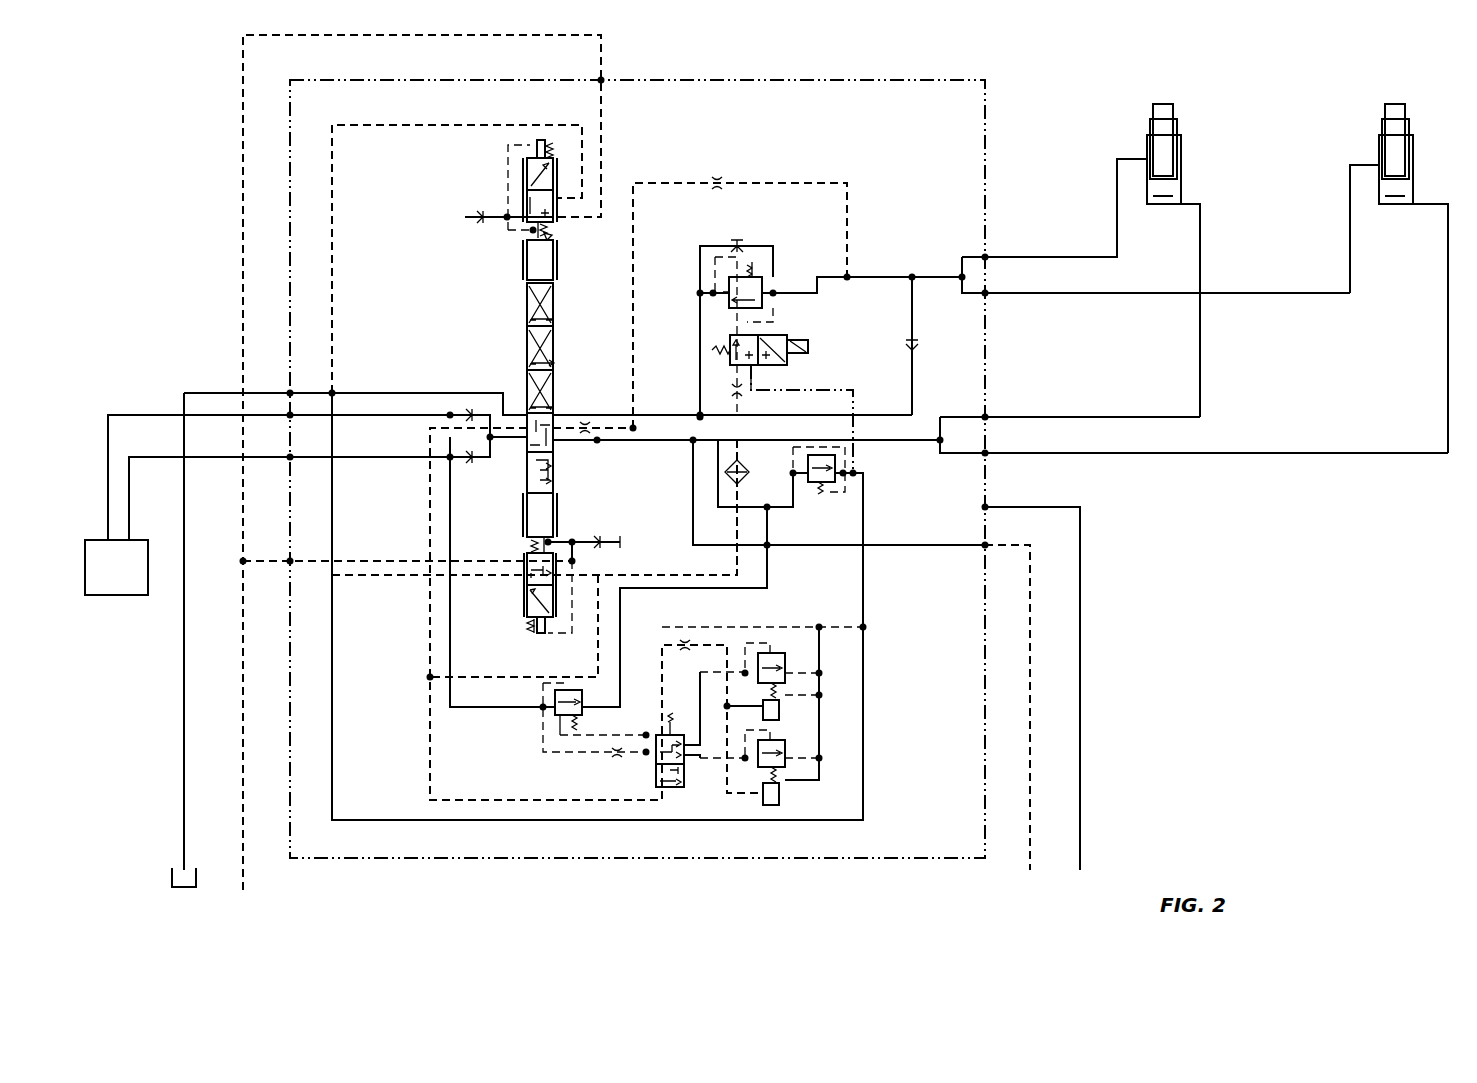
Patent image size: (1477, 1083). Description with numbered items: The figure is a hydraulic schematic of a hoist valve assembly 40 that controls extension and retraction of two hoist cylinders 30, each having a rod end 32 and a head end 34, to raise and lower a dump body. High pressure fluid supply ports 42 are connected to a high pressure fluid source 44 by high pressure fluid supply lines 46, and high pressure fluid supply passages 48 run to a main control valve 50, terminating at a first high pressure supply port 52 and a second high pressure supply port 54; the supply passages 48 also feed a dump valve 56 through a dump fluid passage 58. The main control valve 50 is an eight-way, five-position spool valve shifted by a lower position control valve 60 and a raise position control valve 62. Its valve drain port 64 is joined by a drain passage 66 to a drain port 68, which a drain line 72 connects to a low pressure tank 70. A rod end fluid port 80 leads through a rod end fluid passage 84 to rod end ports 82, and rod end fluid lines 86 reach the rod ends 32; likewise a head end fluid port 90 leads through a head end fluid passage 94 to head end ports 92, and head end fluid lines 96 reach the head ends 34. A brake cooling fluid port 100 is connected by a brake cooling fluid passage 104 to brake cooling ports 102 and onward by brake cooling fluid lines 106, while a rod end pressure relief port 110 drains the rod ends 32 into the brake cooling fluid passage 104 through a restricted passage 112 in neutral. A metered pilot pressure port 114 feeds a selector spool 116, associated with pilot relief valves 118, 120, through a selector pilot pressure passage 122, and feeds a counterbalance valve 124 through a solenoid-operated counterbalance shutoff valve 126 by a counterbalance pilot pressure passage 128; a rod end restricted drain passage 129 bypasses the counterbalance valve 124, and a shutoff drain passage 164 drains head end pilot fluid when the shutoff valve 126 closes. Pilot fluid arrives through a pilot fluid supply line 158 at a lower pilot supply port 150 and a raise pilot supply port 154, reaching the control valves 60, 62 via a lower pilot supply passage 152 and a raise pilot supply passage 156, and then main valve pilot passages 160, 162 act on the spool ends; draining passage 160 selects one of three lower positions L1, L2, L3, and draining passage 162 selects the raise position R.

The hoist cylinders 30 is at (1163, 104).
The rod ends 32 is at (1177, 148).
The head ends 34 is at (1164, 204).
The hoist valve assembly 40 is at (937, 80).
The high pressure fluid supply ports 42 is at (290, 457).
The high pressure fluid source 44 is at (116, 567).
The high pressure fluid supply lines 46 is at (160, 457).
The high pressure fluid supply passages 48 is at (380, 457).
The main control valve 50 is at (500, 292).
The first high pressure supply port 52 is at (527, 440).
The second high pressure supply port 54 is at (527, 450).
The dump valve 56 is at (555, 713).
The dump fluid passage 58 is at (500, 707).
The lower position control valve 60 is at (527, 600).
The raise position control valve 62 is at (527, 170).
The valve drain port 64 is at (527, 400).
The drain passage 66 is at (334, 393).
The drain port 68 is at (290, 393).
The low pressure tank 70 is at (182, 887).
The drain line 72 is at (184, 768).
The rod end fluid port 80 is at (553, 397).
The rod end ports 82 is at (985, 291).
The rod end fluid passage 84 is at (912, 368).
The rod end fluid lines 86 is at (1095, 291).
The head end fluid port 90 is at (553, 440).
The head end ports 92 is at (985, 451).
The head end fluid passage 94 is at (897, 442).
The head end fluid lines 96 is at (1143, 451).
The brake cooling fluid port 100 is at (553, 457).
The brake cooling ports 102 is at (985, 545).
The brake cooling fluid passage 104 is at (680, 448).
The brake cooling fluid lines 106 is at (1080, 722).
The rod end pressure relief port 110 is at (565, 415).
The restricted passage 112 is at (640, 428).
The metered pilot pressure port 114 is at (527, 418).
The selector spool 116 is at (656, 773).
The pilot relief valve 118 is at (785, 668).
The pilot relief valve 120 is at (785, 752).
The selector pilot pressure passage 122 is at (430, 745).
The counterbalance valve 124 is at (757, 282).
The counterbalance shutoff valve 126 is at (770, 335).
The counterbalance pilot pressure passage 128 is at (668, 573).
The rod end restricted drain passage 129 is at (810, 183).
The lower pilot supply port 150 is at (290, 563).
The lower pilot supply passage 152 is at (380, 561).
The raise pilot supply port 154 is at (602, 80).
The raise pilot supply passage 156 is at (584, 128).
The pilot fluid supply line 158 is at (243, 658).
The main valve pilot passage 160 is at (574, 561).
The main valve pilot passage 162 is at (508, 230).
The shutoff drain passage 164 is at (812, 390).
The dump body lower position L1 is at (553, 305).
The dump body lower position L2 is at (553, 340).
The dump body lower position L3 is at (527, 367).
The dump body raise position R is at (553, 493).